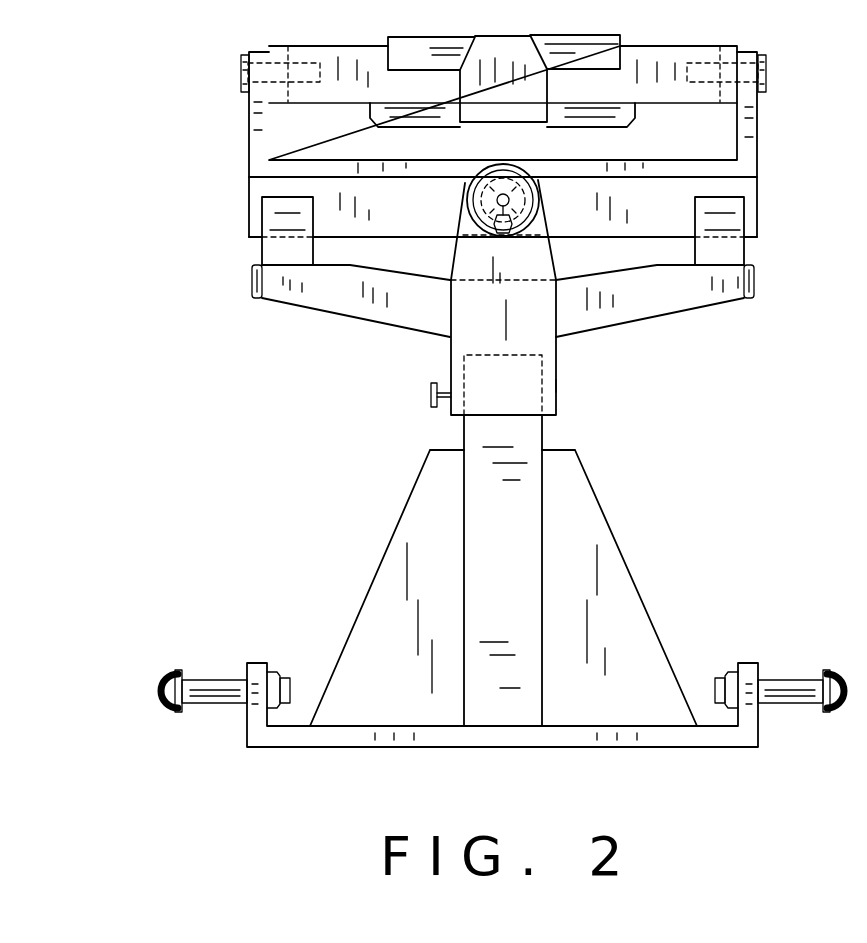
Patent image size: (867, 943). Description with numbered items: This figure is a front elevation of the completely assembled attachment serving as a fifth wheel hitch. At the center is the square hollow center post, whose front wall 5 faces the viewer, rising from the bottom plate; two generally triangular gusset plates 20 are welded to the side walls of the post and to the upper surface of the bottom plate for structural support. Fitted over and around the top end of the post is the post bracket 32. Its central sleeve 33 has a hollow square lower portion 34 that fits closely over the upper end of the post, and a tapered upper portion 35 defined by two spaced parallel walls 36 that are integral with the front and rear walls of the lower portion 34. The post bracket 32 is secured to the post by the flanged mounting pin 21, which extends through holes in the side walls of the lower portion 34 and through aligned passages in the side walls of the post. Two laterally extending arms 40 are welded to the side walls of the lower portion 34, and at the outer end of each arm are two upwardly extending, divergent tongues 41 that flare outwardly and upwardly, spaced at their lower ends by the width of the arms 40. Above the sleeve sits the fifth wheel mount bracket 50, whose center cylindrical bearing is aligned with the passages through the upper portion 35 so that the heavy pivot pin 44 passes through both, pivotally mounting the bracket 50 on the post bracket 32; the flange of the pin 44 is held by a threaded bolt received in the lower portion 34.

The front wall 5 is at (507, 490).
The gusset plates 20 is at (575, 550).
The mounting pin 21 is at (440, 406).
The post bracket 32 is at (448, 359).
The central sleeve 33 is at (545, 345).
The lower portion 34 is at (550, 385).
The tapered upper portion 35 is at (537, 225).
The spaced parallel walls 36 is at (520, 257).
The laterally extending arms 40 is at (338, 300).
The tongues 41 is at (290, 245).
The pivot pin 44 is at (495, 232).
The fifth wheel mount bracket 50 is at (762, 151).